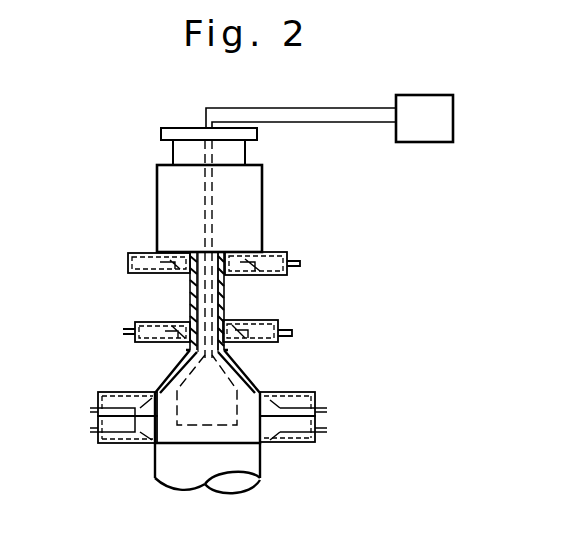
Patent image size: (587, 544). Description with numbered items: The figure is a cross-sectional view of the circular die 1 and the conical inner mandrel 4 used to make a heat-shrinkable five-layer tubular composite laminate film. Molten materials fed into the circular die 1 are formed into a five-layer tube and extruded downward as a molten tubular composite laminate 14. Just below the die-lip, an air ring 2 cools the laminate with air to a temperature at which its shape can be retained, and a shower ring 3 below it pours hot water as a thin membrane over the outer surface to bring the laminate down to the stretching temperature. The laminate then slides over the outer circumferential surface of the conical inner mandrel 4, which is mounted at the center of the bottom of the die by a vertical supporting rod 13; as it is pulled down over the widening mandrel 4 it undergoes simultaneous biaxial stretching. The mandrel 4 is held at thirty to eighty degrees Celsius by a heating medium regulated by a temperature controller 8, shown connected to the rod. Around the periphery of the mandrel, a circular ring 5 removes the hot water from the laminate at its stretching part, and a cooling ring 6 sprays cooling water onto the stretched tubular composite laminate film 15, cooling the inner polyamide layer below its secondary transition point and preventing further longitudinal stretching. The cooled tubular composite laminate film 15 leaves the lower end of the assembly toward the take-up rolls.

The circular die 1 is at (255, 182).
The air ring 2 is at (285, 253).
The shower ring 3 is at (278, 320).
The conical inner mandrel 4 is at (207, 400).
The circular ring 5 is at (317, 393).
The cooling ring 6 is at (322, 423).
The temperature controller 8 is at (430, 137).
The vertical supporting rod 13 is at (215, 293).
The molten tubular composite laminate 14 is at (190, 299).
The tubular composite laminate film 15 is at (153, 456).